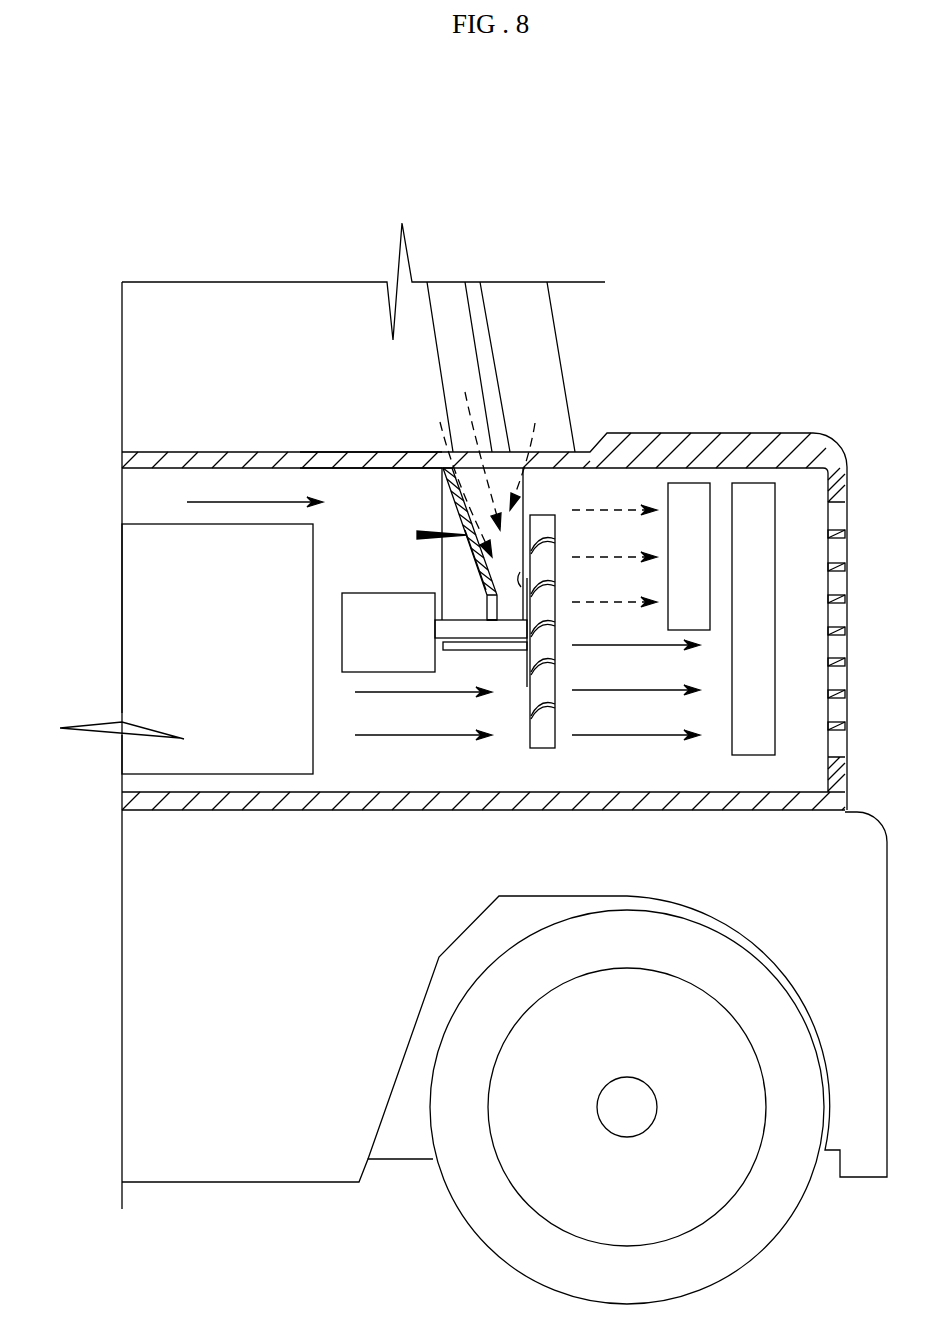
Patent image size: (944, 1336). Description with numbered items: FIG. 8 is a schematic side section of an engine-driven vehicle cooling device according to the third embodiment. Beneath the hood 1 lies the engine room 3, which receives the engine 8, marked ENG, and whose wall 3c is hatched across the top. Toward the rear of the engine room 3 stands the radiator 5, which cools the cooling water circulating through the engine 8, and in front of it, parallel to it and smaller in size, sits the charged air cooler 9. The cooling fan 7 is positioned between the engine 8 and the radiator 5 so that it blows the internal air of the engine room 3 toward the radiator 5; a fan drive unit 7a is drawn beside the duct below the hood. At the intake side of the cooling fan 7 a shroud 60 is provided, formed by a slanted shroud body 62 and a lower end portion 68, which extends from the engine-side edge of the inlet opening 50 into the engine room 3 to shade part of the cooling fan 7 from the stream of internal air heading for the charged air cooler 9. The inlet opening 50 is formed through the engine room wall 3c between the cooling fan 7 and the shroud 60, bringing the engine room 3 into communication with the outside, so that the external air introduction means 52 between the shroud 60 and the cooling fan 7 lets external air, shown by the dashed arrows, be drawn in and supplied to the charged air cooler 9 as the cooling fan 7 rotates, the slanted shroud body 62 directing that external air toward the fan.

The hood 1 is at (198, 455).
The engine room 3 is at (146, 487).
The engine room wall 3c is at (380, 462).
The inlet opening 50 is at (435, 455).
The external air introduction means 52 is at (522, 578).
The charged air cooler 9 is at (684, 500).
The radiator 5 is at (752, 500).
The shroud 60 is at (418, 535).
The shroud body 62 is at (483, 565).
The shroud lower end portion 68 is at (487, 602).
The engine 8 is at (160, 755).
The fan drive unit 7a is at (392, 653).
The cooling fan 7 is at (542, 735).